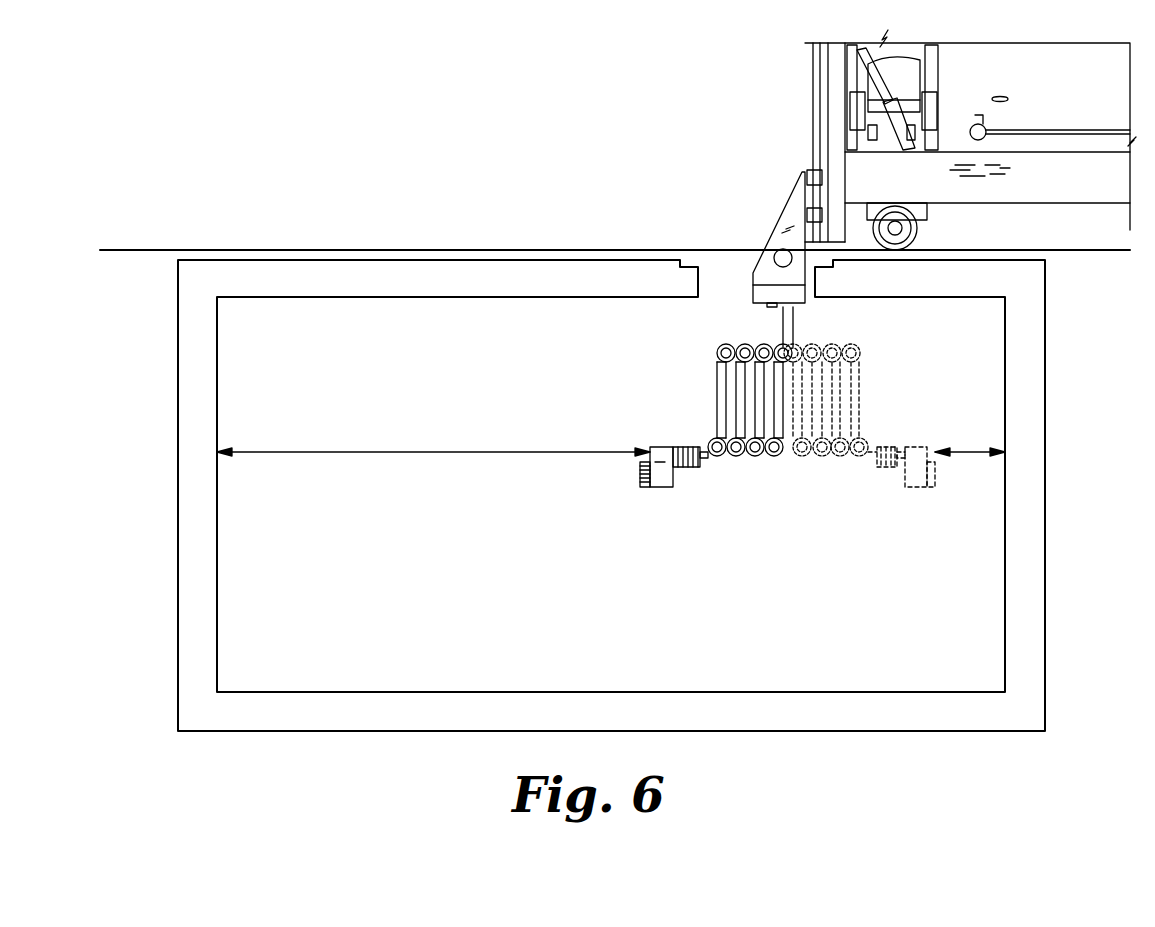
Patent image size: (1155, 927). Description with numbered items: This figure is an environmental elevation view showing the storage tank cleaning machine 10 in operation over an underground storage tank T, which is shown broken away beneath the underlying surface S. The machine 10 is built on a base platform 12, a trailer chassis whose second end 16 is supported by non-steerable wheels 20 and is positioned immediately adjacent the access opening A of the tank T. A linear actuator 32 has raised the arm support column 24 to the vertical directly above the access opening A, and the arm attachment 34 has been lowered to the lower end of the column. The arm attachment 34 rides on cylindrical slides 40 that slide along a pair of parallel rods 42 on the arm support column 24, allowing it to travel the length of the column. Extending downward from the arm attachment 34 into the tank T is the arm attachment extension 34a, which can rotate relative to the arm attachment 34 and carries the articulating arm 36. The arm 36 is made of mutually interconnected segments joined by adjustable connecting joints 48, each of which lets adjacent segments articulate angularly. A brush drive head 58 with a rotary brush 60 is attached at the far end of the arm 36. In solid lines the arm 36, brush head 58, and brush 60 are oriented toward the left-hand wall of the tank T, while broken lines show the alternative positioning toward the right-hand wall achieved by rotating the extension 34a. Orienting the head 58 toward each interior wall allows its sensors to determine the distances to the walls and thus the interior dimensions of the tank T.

The storage tank cleaning machine 10 is at (778, 70).
The base platform 12 is at (1100, 189).
The second end 16 is at (843, 167).
The non-steerable wheels 20 is at (918, 236).
The arm support column 24 is at (828, 53).
The linear actuator 32 is at (902, 92).
The arm attachment 34 is at (787, 193).
The arm attachment extension 34a is at (797, 320).
The articulating arm 36 is at (688, 385).
The cylindrical slides 40 is at (822, 215).
The parallel rods 42 is at (813, 93).
The adjustable connecting joint 48 is at (760, 343).
The brush drive head 58 is at (660, 487).
The rotary brush 60 is at (640, 480).
The access opening A is at (716, 245).
The underlying surface S is at (413, 249).
The storage tank T is at (402, 563).